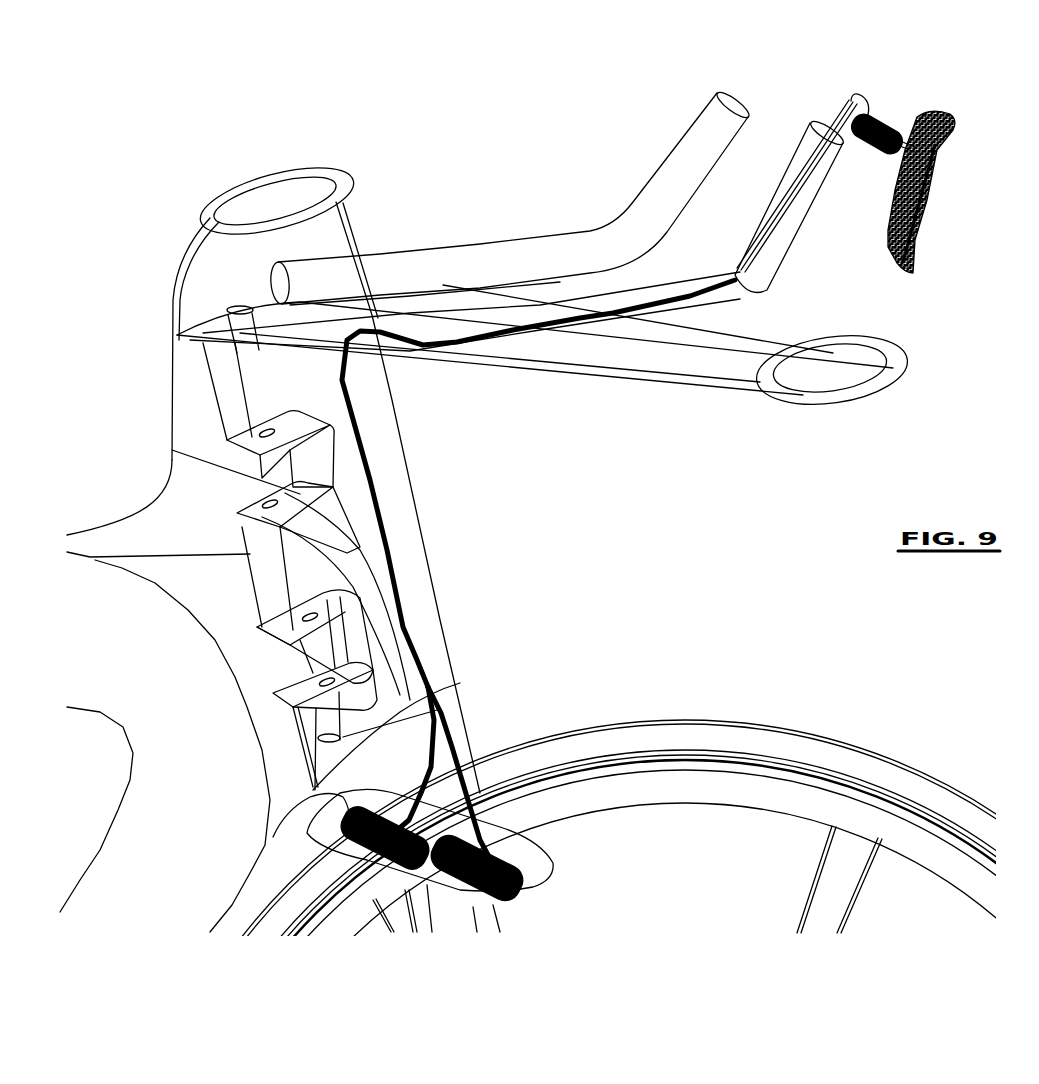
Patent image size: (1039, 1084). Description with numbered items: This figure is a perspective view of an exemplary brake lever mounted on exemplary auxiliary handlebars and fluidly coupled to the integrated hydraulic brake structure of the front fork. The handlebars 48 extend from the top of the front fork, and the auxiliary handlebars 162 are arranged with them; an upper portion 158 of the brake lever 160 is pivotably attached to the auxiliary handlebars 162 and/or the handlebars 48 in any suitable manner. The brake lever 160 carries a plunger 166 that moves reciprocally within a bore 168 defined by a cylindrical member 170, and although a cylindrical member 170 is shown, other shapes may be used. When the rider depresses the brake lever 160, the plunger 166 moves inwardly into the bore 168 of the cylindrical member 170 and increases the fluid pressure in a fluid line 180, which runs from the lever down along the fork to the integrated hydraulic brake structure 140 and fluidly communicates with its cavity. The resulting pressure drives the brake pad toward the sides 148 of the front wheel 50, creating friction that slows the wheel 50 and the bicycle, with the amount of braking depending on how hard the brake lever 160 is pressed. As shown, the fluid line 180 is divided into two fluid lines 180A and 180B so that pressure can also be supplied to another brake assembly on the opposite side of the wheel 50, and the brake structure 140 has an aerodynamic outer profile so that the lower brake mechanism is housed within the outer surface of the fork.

The handlebars 48 is at (617, 373).
The front wheel 50 is at (704, 722).
The integrated hydraulic brake structure 140 is at (560, 863).
The sides of the wheel 148 is at (704, 784).
The upper portion of the brake lever 158 is at (953, 137).
The brake lever 160 is at (937, 190).
The auxiliary handlebars 162 is at (688, 279).
The plunger 166 is at (905, 142).
The bore 168 is at (883, 118).
The cylindrical member 170 is at (872, 150).
The fluid line 180 is at (770, 292).
The fluid line 180A is at (453, 747).
The fluid line 180B is at (433, 687).